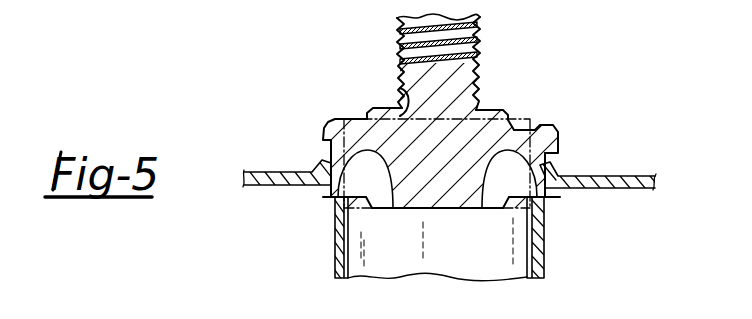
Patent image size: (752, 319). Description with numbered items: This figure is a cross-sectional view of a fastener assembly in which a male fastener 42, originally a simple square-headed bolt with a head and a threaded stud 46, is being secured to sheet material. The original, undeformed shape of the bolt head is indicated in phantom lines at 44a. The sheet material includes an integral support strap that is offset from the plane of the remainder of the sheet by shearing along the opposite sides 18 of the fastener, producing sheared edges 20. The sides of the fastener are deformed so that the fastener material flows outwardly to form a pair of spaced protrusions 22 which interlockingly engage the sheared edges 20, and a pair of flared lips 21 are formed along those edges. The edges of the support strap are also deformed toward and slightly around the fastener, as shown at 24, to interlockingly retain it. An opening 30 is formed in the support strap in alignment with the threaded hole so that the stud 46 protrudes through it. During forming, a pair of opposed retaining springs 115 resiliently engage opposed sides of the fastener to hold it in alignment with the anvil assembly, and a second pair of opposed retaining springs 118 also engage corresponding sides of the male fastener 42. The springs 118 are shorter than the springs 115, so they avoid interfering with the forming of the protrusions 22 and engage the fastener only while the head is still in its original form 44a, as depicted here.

The opposite sides 18 is at (330, 196).
The sheared edges 20 is at (333, 201).
The flared lips 21 is at (393, 208).
The protrusions 22 is at (327, 173).
The deformed support strap edges 24 is at (326, 127).
The opening 30 is at (403, 106).
The male fastener 42 is at (518, 203).
The original form of head 44a is at (533, 118).
The threaded stud 46 is at (480, 72).
The retaining springs 115 is at (410, 273).
The second pair of retaining springs 118 is at (338, 262).